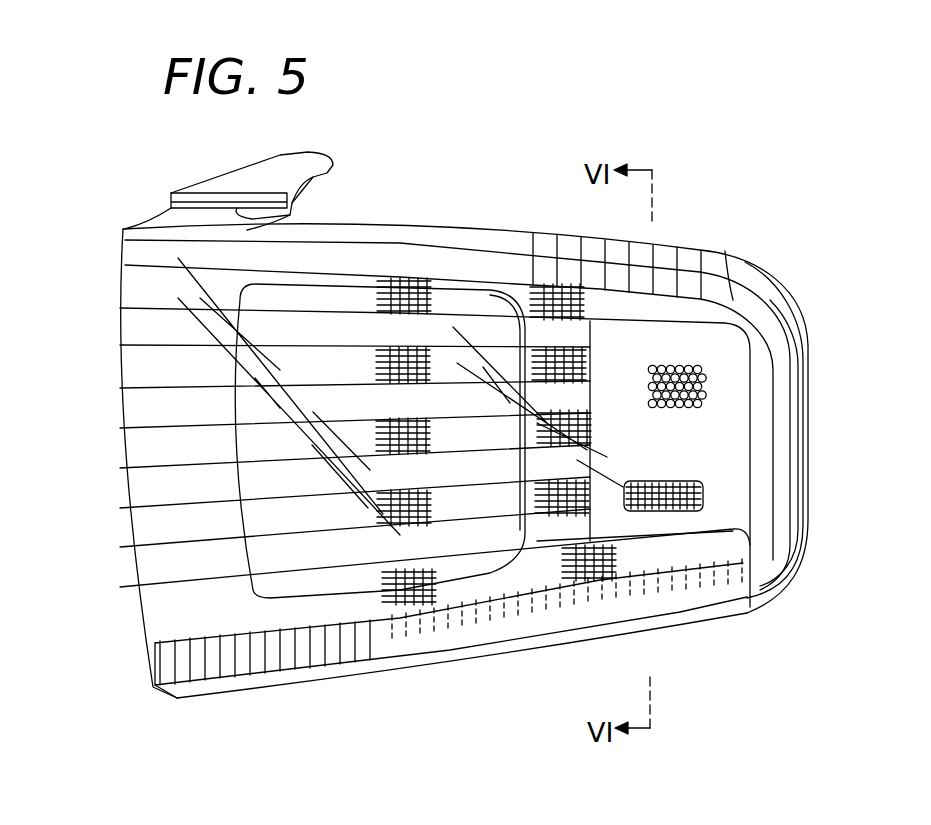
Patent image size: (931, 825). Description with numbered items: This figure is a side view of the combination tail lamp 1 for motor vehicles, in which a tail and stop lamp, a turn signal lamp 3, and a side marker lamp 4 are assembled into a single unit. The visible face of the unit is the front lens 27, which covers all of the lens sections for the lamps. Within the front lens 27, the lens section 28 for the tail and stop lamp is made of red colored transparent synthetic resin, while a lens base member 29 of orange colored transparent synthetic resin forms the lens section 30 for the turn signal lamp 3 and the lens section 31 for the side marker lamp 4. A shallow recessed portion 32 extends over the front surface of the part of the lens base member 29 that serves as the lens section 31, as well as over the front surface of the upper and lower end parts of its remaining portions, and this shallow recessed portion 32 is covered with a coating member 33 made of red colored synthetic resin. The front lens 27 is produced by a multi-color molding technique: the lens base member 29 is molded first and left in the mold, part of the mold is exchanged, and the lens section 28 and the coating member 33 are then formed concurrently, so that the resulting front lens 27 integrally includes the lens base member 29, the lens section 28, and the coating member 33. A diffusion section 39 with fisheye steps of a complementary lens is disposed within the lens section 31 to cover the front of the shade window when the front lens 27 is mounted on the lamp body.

The combination tail lamp 1 is at (445, 152).
The turn signal lamp 3 is at (360, 335).
The side marker lamp 4 is at (707, 370).
The front lens 27 is at (300, 618).
The lens section 28 is at (132, 371).
The lens base member 29 is at (373, 548).
The lens section 30 is at (466, 342).
The lens section 31 is at (722, 517).
The shallow recessed portion 32 is at (553, 543).
The coating member 33 is at (735, 445).
The diffusion section 39 is at (705, 492).